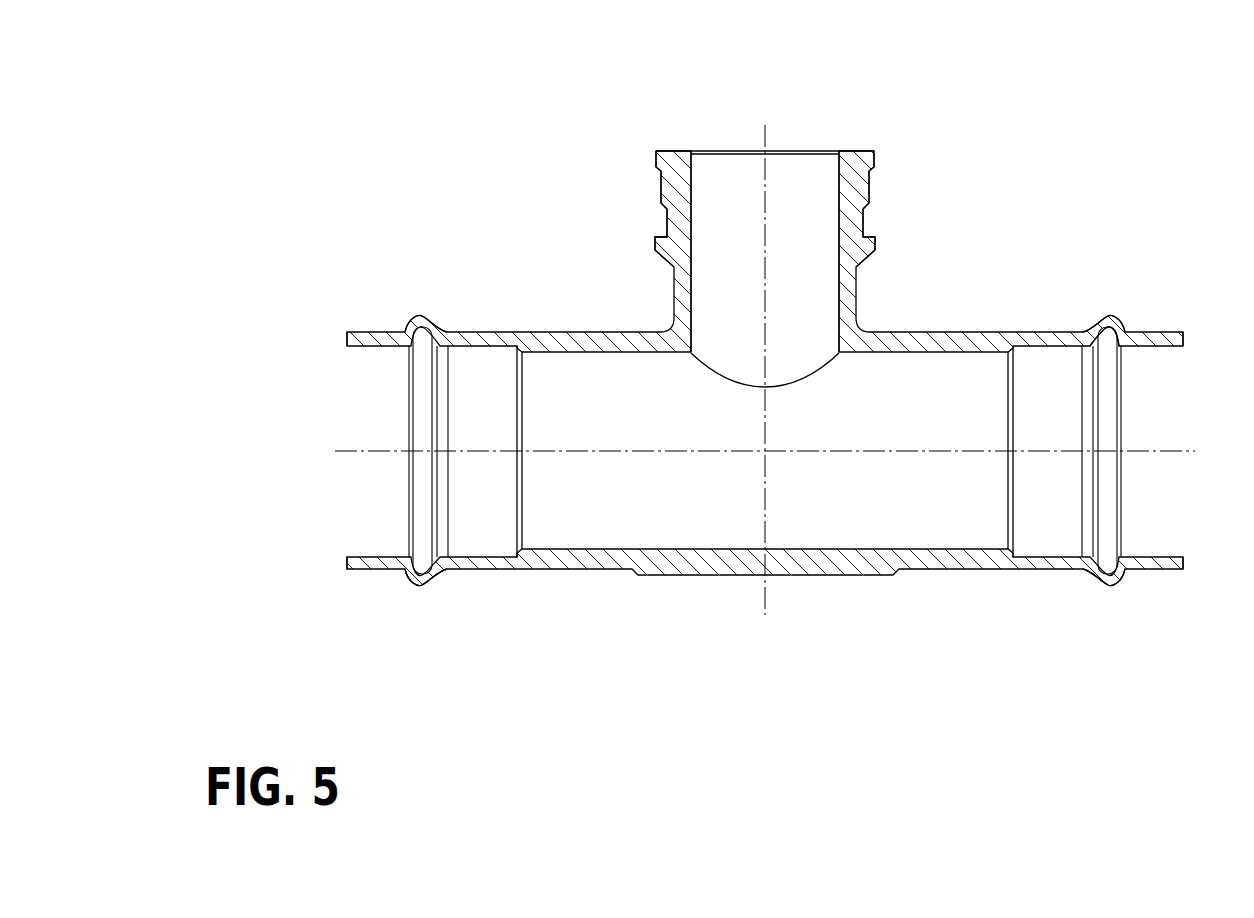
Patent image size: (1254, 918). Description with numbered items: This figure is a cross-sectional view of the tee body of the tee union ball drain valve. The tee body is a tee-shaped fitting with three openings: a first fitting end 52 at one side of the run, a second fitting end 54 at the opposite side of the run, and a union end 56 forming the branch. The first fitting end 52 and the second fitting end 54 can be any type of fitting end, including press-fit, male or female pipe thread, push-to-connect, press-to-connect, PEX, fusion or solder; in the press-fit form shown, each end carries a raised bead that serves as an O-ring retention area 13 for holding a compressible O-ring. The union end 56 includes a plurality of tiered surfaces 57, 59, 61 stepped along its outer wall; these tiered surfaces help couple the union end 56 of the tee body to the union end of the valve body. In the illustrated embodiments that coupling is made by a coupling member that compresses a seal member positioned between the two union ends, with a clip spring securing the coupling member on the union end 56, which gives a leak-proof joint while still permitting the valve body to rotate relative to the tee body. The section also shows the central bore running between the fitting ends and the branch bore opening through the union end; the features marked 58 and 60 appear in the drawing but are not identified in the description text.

The O-ring retention area 13 is at (1107, 315).
The first fitting end 52 is at (1057, 570).
The second fitting end 54 is at (467, 570).
The union end 56 is at (847, 208).
The tiered surface 57 is at (663, 190).
The main pipe body 58 is at (818, 497).
The tiered surface 59 is at (657, 240).
The branch outlet 60 is at (855, 148).
The tiered surface 61 is at (655, 152).